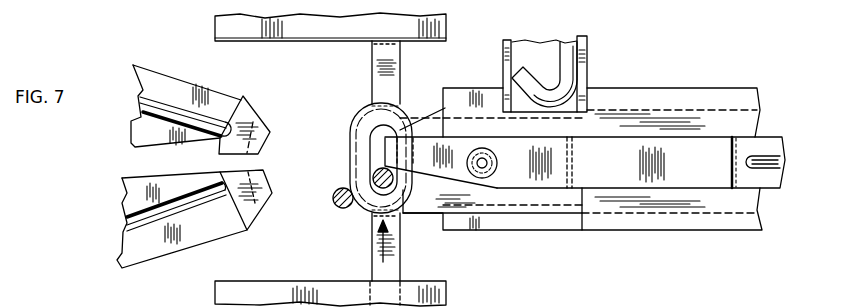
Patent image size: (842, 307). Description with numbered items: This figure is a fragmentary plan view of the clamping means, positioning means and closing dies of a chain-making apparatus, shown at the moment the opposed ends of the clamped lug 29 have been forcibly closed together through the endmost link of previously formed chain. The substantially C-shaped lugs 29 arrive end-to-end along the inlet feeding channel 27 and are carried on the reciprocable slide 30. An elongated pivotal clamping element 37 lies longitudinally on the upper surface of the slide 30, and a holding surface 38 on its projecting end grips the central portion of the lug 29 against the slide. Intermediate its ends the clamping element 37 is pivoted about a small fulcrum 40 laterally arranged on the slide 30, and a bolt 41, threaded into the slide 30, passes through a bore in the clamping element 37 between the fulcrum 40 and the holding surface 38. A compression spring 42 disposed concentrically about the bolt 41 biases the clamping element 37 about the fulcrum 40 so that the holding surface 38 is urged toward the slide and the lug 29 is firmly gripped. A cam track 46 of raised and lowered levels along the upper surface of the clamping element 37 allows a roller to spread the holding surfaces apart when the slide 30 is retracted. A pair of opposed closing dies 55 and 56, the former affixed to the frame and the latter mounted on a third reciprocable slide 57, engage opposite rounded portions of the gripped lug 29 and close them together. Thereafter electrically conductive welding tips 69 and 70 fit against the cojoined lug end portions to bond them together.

The inlet feeding channel 27 is at (587, 54).
The lug 29 is at (440, 111).
The slide 30 is at (507, 199).
The clamping element 37 is at (429, 126).
The second holding surface 38 is at (370, 148).
The fulcrum 40 is at (585, 162).
The bolt 41 is at (493, 164).
The compression spring 42 is at (494, 153).
The cam track 46 is at (741, 157).
The closing die 55 is at (379, 83).
The closing die 56 is at (392, 267).
The third reciprocable slide 57 is at (327, 290).
The welding tip 69 is at (248, 118).
The welding tip 70 is at (253, 212).